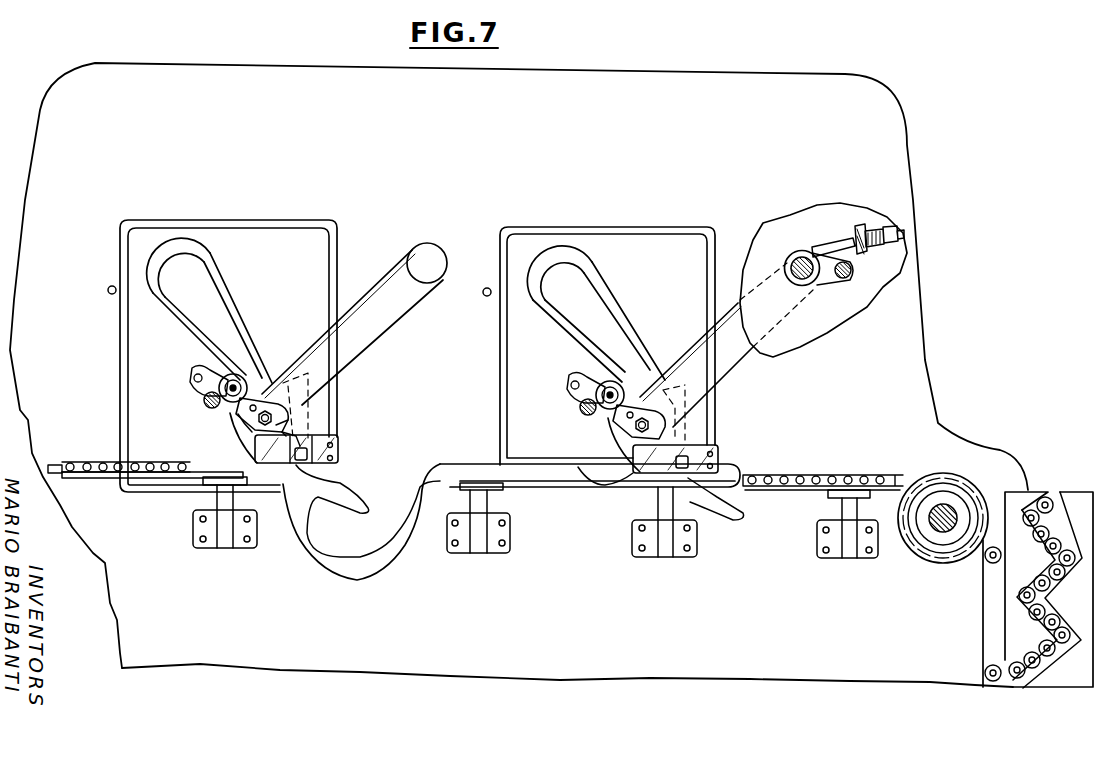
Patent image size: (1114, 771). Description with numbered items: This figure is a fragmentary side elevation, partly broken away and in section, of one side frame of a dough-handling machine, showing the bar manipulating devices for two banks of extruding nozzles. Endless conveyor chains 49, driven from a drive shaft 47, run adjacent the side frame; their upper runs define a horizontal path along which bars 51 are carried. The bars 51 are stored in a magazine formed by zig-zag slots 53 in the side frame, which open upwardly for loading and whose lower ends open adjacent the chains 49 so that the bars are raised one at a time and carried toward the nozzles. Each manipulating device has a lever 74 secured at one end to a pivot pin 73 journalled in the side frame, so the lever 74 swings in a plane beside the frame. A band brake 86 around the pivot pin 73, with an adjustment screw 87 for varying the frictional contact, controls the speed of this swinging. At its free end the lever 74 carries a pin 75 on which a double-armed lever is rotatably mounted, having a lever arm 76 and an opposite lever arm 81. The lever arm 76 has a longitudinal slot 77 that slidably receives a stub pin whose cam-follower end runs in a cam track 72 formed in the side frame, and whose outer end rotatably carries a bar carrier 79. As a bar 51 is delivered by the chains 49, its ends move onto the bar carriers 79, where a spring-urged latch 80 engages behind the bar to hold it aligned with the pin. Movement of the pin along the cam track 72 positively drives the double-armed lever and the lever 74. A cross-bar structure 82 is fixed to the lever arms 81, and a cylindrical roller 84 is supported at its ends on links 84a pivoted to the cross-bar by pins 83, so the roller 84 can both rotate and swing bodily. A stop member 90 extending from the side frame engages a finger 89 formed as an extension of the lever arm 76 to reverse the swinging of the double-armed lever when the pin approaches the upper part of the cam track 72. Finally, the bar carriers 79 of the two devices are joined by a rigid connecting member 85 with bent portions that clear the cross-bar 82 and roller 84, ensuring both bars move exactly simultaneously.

The drive shaft 47 is at (947, 507).
The endless conveyor chains 49 is at (95, 460).
The bars 51 is at (315, 460).
The zig-zag slots 53 is at (1058, 497).
The cam track 72 is at (194, 257).
The pivot pin 73 is at (431, 255).
The lever 74 is at (378, 297).
The pin 75 is at (270, 412).
The lever arm 76 is at (287, 430).
The longitudinal slot 77 is at (293, 433).
The bar carrier 79 is at (347, 450).
The latch 80 is at (333, 433).
The lever arm 81 is at (243, 413).
The cross-bar structure 82 is at (205, 402).
The pins 83 is at (200, 380).
The cylindrical roller 84 is at (243, 380).
The links 84a is at (207, 383).
The rigid connecting member 85 is at (452, 473).
The band brake 86 is at (798, 258).
The adjustment screw 87 is at (867, 233).
The finger 89 is at (350, 500).
The stop member 90 is at (108, 286).